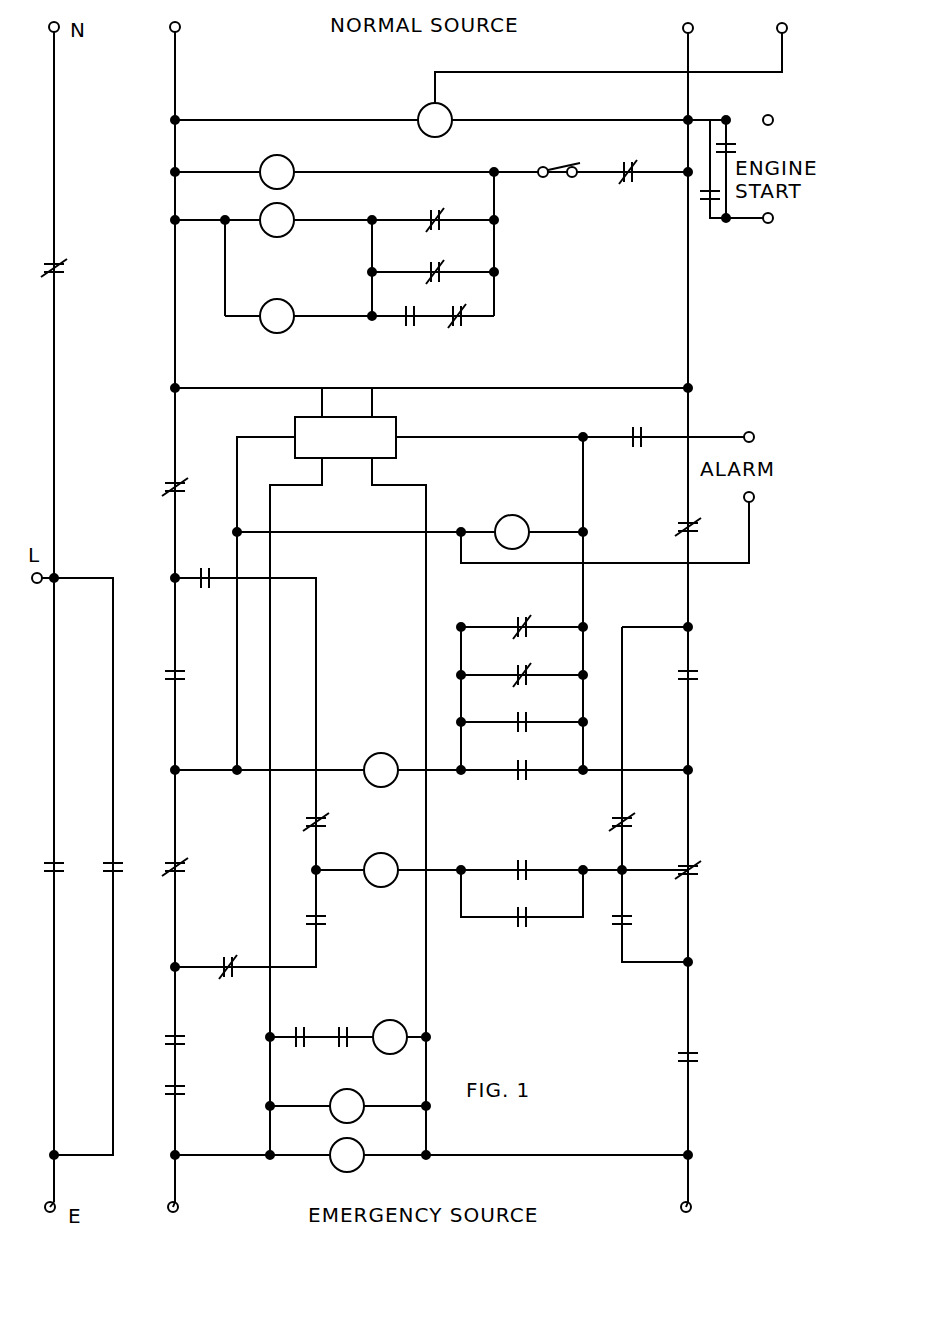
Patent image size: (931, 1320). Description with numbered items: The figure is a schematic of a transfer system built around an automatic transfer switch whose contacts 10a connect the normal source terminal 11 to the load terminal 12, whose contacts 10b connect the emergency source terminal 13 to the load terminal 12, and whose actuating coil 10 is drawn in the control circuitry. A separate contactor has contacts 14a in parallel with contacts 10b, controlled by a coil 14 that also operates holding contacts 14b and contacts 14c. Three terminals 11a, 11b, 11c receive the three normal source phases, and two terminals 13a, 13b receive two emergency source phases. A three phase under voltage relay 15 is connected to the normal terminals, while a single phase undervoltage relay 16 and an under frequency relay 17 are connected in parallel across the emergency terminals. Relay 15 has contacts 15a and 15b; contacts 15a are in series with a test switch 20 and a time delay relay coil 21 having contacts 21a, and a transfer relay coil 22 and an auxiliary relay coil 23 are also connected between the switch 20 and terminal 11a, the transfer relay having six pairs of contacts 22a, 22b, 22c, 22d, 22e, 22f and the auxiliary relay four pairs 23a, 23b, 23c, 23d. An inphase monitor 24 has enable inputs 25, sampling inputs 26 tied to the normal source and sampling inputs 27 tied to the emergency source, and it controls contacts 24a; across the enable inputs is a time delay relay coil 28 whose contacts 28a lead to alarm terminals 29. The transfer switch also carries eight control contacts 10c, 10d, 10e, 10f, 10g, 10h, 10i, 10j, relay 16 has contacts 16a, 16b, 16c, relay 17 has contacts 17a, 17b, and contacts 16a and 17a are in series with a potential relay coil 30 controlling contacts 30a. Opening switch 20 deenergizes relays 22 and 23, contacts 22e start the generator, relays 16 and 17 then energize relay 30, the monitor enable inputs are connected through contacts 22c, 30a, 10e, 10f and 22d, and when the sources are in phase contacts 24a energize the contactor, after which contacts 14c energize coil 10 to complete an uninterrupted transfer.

The actuating coil 10 is at (388, 732).
The pair of contacts 10a is at (60, 275).
The pair of contacts 10b is at (58, 878).
The control circuit contacts 10c is at (180, 684).
The control circuit contacts 10d is at (693, 684).
The control circuit contacts 10e is at (183, 875).
The control circuit contacts 10f is at (695, 872).
The control circuit contacts 10g is at (412, 326).
The control circuit contacts 10h is at (728, 140).
The control circuit contacts 10i is at (232, 956).
The control circuit contacts 10j is at (202, 570).
The normal source terminal 11 is at (58, 34).
The normal source terminal 11a is at (179, 34).
The normal source terminal 11b is at (684, 34).
The normal source terminal 11c is at (778, 30).
The load terminal 12 is at (40, 582).
The emergency source terminal 13 is at (56, 1200).
The emergency source terminal 13a is at (177, 1200).
The emergency source terminal 13b is at (690, 1200).
The contactor coil 14 is at (395, 833).
The pair of contacts 14a is at (116, 878).
The pair of contacts 14b is at (520, 930).
The pair of contacts 14c is at (518, 780).
The under voltage relay 15 is at (423, 108).
The pair of contacts 15a is at (634, 160).
The pair of contacts 15b is at (522, 734).
The undervoltage relay 16 is at (364, 1098).
The pair of contacts 16a is at (368, 1012).
The pair of contacts 16b is at (522, 667).
The pair of contacts 16c is at (462, 326).
The under frequency relay 17 is at (362, 1148).
The pair of contacts 17a is at (298, 1027).
The pair of contacts 17b is at (522, 618).
The test switch 20 is at (555, 165).
The time delay relay coil 21 is at (292, 160).
The contacts 21a is at (430, 266).
The transfer relay coil 22 is at (292, 208).
The contacts 22a is at (165, 486).
The contacts 22b is at (680, 527).
The contacts 22c is at (182, 1093).
The contacts 22d is at (693, 1063).
The contacts 22e is at (700, 193).
The contacts 22f is at (430, 214).
The auxiliary relay coil 23 is at (292, 304).
The contacts 23a is at (322, 820).
The contacts 23b is at (672, 815).
The contacts 23c is at (325, 922).
The contacts 23d is at (632, 925).
The inphase monitor 24 is at (348, 417).
The pair of contacts 24a is at (522, 858).
The enable inputs 25 is at (420, 455).
The sampling inputs 26 is at (375, 416).
The sampling inputs 27 is at (368, 460).
The time delay relay coil 28 is at (514, 515).
The pair of contacts 28a is at (632, 428).
The terminals of an alarm 29 is at (752, 503).
The potential relay coil 30 is at (396, 1018).
The pair of contacts 30a is at (180, 1034).